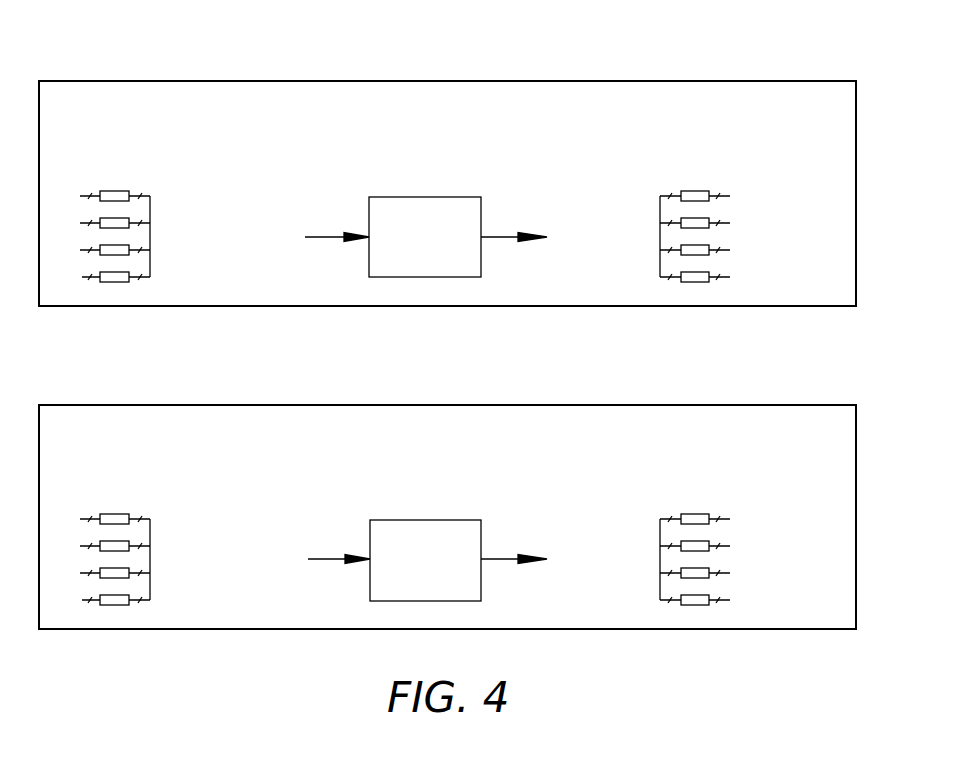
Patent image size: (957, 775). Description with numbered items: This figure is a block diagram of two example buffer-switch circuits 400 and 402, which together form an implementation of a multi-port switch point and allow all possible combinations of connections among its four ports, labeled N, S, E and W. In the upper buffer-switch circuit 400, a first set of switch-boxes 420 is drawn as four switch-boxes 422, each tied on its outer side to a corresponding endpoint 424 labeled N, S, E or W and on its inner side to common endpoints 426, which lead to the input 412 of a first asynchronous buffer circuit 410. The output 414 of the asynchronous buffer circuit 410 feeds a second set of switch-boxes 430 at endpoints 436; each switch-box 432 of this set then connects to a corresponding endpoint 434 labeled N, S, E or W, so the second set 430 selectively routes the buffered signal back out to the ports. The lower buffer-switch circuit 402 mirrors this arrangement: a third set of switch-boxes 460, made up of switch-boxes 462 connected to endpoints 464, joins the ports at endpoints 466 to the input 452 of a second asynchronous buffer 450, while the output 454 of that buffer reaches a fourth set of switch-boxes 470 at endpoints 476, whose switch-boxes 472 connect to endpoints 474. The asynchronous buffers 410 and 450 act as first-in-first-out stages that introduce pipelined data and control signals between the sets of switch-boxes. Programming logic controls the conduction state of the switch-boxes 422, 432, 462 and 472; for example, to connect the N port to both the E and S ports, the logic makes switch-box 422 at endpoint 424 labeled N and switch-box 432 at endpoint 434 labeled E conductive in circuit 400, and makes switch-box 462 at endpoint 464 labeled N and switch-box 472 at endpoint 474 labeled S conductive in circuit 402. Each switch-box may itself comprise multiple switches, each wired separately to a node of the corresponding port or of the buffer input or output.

The buffer-switch circuit 400 is at (773, 62).
The buffer-switch circuit 402 is at (773, 387).
The first asynchronous buffer circuit 410 is at (427, 197).
The input of the first asynchronous buffer circuit 412 is at (328, 237).
The output of the asynchronous buffer circuit 414 is at (503, 237).
The first set of switch-boxes 420 is at (178, 150).
The switch-box 422 is at (127, 191).
The endpoints of the first set of switch-boxes 424 is at (88, 195).
The endpoints 426 is at (150, 269).
The second set of switch-boxes 430 is at (760, 137).
The switch-box 432 is at (684, 191).
The endpoints of the second set of switch-boxes 434 is at (724, 195).
The endpoints 436 is at (660, 269).
The second asynchronous buffer 450 is at (427, 520).
The input of the second asynchronous buffer 452 is at (338, 559).
The output of the second asynchronous buffer 454 is at (505, 559).
The third set of switch-boxes 460 is at (178, 473).
The switch-box 462 is at (127, 514).
The endpoint 464 is at (88, 518).
The endpoints 466 is at (150, 592).
The fourth set of switch-boxes 470 is at (760, 462).
The switch-box 472 is at (684, 514).
The endpoint 474 is at (724, 518).
The endpoints 476 is at (660, 592).